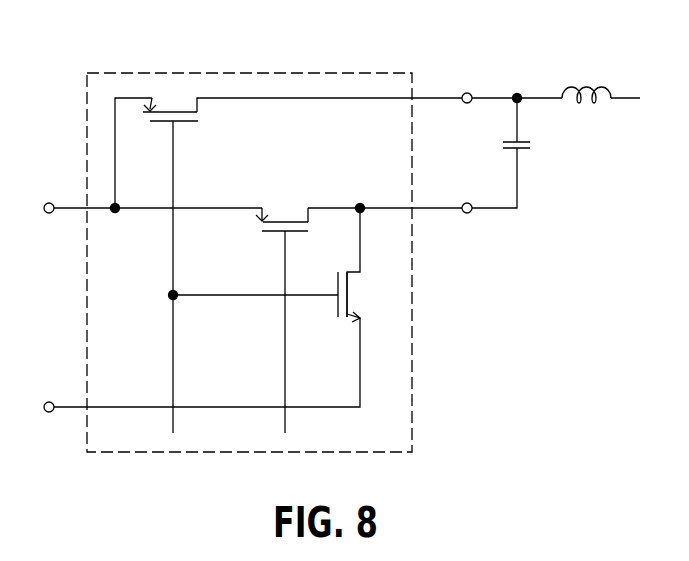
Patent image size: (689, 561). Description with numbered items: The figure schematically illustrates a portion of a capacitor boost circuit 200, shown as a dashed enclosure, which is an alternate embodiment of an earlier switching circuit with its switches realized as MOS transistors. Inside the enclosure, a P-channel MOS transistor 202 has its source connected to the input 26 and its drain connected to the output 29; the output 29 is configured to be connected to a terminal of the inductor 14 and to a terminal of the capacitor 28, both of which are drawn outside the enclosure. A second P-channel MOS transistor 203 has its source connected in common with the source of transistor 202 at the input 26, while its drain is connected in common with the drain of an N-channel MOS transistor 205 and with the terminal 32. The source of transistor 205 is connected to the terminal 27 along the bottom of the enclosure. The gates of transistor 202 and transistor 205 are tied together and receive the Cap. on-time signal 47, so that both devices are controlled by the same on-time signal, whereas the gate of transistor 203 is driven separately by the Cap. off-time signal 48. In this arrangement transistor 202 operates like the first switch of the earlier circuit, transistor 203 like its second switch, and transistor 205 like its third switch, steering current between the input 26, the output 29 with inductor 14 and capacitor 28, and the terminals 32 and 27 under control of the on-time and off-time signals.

The inductor 14 is at (590, 86).
The input 26 is at (51, 203).
The terminal 27 is at (51, 402).
The capacitor 28 is at (533, 145).
The output 29 is at (470, 93).
The terminal 32 is at (470, 213).
The Cap. on-time signal 47 is at (175, 334).
The Cap. off-time signal 48 is at (283, 361).
The capacitor boost circuit 200 is at (412, 335).
The P-channel MOS transistor 202 is at (200, 115).
The P-channel MOS transistor 203 is at (296, 207).
The N-channel MOS transistor 205 is at (360, 316).